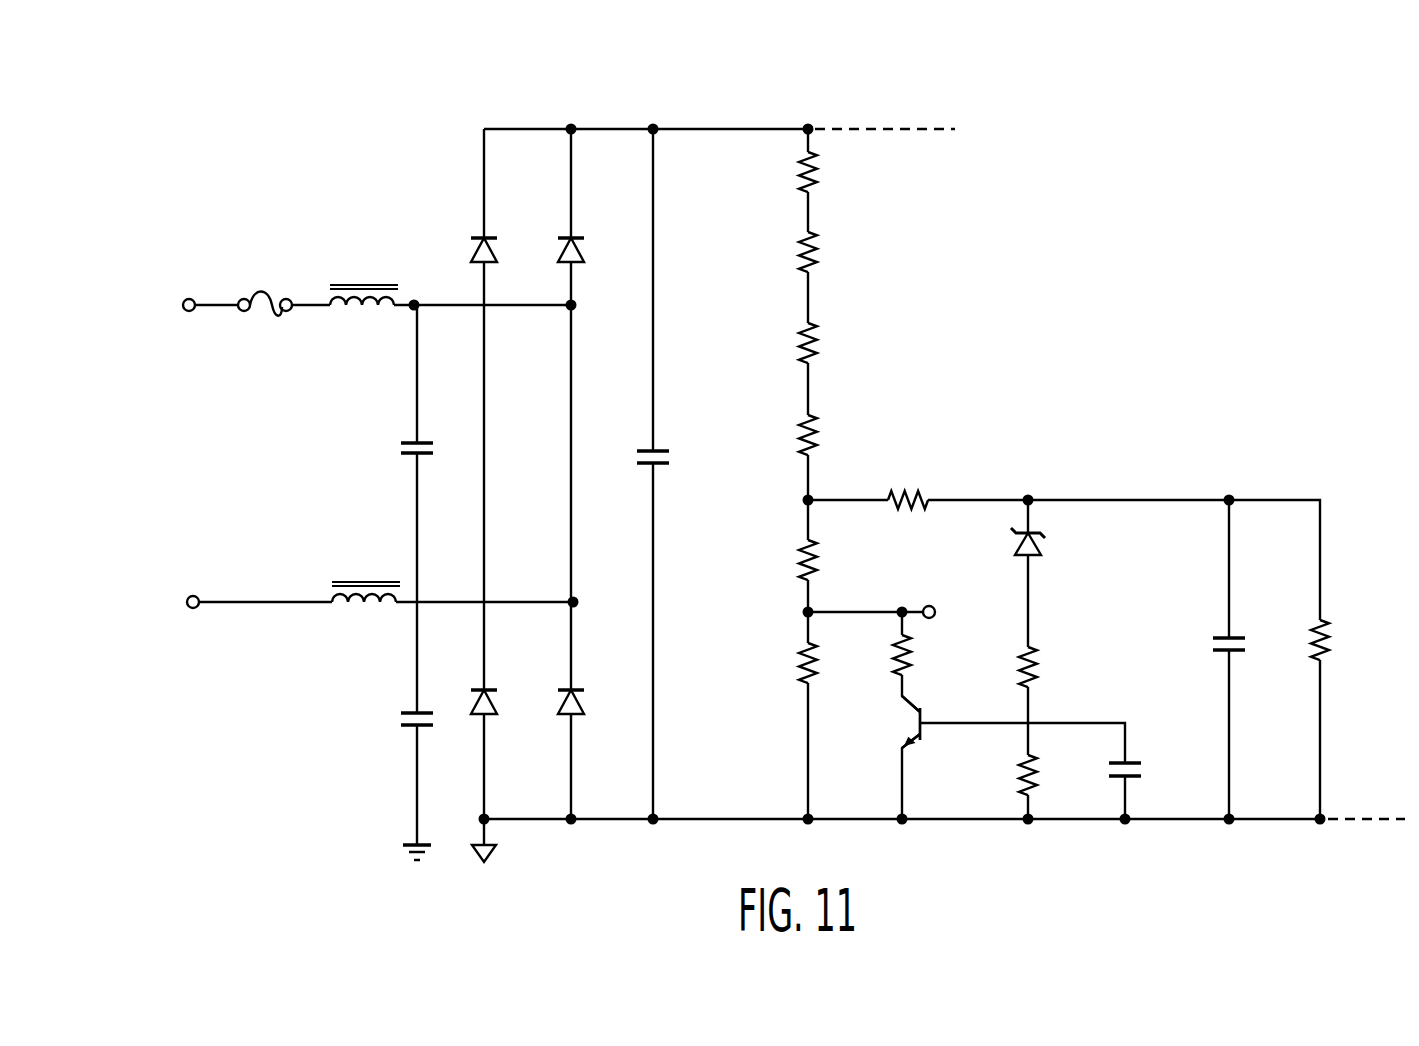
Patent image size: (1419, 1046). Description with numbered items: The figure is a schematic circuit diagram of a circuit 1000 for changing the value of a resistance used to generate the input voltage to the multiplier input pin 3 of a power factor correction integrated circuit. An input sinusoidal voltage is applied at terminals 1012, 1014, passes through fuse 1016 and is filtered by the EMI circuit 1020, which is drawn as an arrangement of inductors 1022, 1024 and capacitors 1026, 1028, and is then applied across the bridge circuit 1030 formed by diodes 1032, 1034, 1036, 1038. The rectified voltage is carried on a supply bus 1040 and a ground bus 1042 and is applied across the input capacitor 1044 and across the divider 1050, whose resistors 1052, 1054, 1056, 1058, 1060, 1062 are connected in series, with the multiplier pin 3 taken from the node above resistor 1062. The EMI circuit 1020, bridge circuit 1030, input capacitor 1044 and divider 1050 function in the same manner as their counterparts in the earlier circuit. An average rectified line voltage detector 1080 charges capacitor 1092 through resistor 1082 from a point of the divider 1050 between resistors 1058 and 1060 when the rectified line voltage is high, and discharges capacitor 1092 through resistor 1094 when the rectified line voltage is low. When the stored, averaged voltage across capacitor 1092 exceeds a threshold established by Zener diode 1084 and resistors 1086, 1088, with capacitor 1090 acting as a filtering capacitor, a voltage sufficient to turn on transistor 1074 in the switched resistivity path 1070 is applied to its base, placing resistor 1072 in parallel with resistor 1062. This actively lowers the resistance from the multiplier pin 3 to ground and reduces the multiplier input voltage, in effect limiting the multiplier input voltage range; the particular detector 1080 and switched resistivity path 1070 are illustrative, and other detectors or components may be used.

The power supply circuit 1000 is at (320, 138).
The first input terminal 1012 is at (189, 298).
The second input terminal 1014 is at (193, 610).
The fuse 1016 is at (253, 292).
The EMI circuit 1020 is at (356, 409).
The first choke winding 1022 is at (380, 280).
The second choke winding 1024 is at (363, 580).
The first filter capacitor 1026 is at (408, 442).
The second filter capacitor 1028 is at (400, 716).
The bridge circuit 1030 is at (515, 424).
The first rectifier diode 1032 is at (498, 248).
The second rectifier diode 1034 is at (499, 694).
The third rectifier diode 1036 is at (586, 248).
The fourth rectifier diode 1038 is at (588, 694).
The positive DC bus 1040 is at (601, 127).
The negative DC bus 1042 is at (622, 822).
The input capacitor 1044 is at (670, 450).
The divider 1050 is at (808, 418).
The divider resistor 1052 is at (817, 164).
The divider resistor 1054 is at (817, 254).
The divider resistor 1056 is at (817, 342).
The resistor 1058 is at (817, 432).
The resistor 1060 is at (800, 564).
The resistor 1062 is at (800, 674).
The multiplier pin 3 is at (927, 604).
The switched resistivity path 1070 is at (927, 656).
The resistor 1072 is at (911, 656).
The transistor 1074 is at (910, 740).
The average rectified line voltage detector 1080 is at (1147, 576).
The resistor 1082 is at (927, 496).
The Zener diode 1084 is at (1047, 546).
The resistor 1086 is at (1038, 665).
The resistor 1088 is at (1037, 771).
The capacitor 1090 is at (1141, 770).
The capacitor 1092 is at (1214, 643).
The resistor 1094 is at (1326, 642).